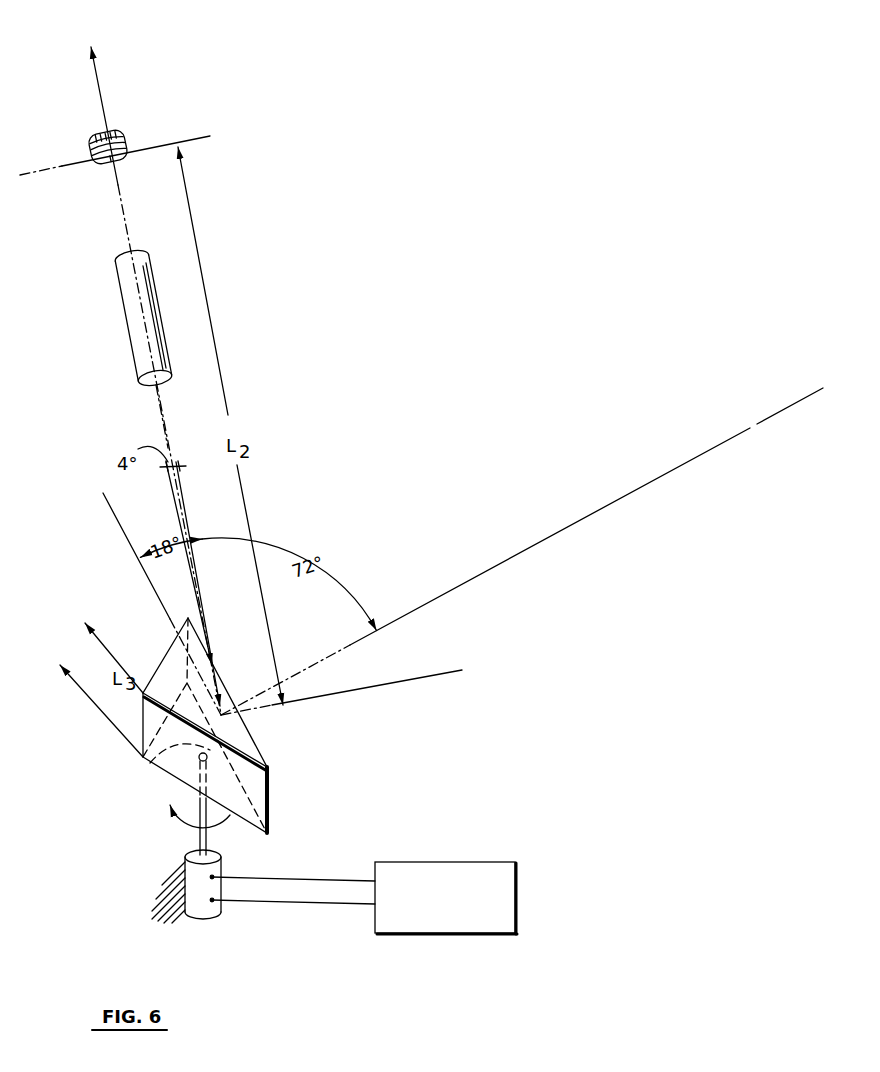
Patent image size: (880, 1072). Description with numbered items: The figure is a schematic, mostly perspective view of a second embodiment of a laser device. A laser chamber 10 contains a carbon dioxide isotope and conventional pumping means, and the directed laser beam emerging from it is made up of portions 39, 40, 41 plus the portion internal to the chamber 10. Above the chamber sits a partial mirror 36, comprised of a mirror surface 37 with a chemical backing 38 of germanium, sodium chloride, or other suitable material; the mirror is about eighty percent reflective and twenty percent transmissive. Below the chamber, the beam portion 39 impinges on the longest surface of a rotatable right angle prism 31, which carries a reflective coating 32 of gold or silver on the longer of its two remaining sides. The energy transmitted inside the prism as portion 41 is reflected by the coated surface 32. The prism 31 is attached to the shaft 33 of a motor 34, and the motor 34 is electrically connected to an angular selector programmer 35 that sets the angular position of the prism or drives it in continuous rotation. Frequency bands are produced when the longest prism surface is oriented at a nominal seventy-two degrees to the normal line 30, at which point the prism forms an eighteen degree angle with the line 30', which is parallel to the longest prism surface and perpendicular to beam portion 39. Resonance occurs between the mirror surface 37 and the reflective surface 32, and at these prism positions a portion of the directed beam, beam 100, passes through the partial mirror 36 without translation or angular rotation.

The beam 100 is at (94, 62).
The partial mirror 36 is at (113, 126).
The chemical backing 38 is at (94, 134).
The mirror surface 37 is at (128, 150).
The directed laser beam portion 40 is at (118, 207).
The laser chamber 10 is at (135, 305).
The directed laser beam portion 39 is at (157, 412).
The line 30' is at (147, 604).
The normal line 30 is at (522, 551).
The rotatable right angle prism 31 is at (176, 660).
The reflective coating 32 is at (252, 747).
The shaft 33 is at (199, 840).
The motor 34 is at (201, 903).
The angular selector programmer 35 is at (496, 892).
The directed energy portion 41 is at (150, 763).